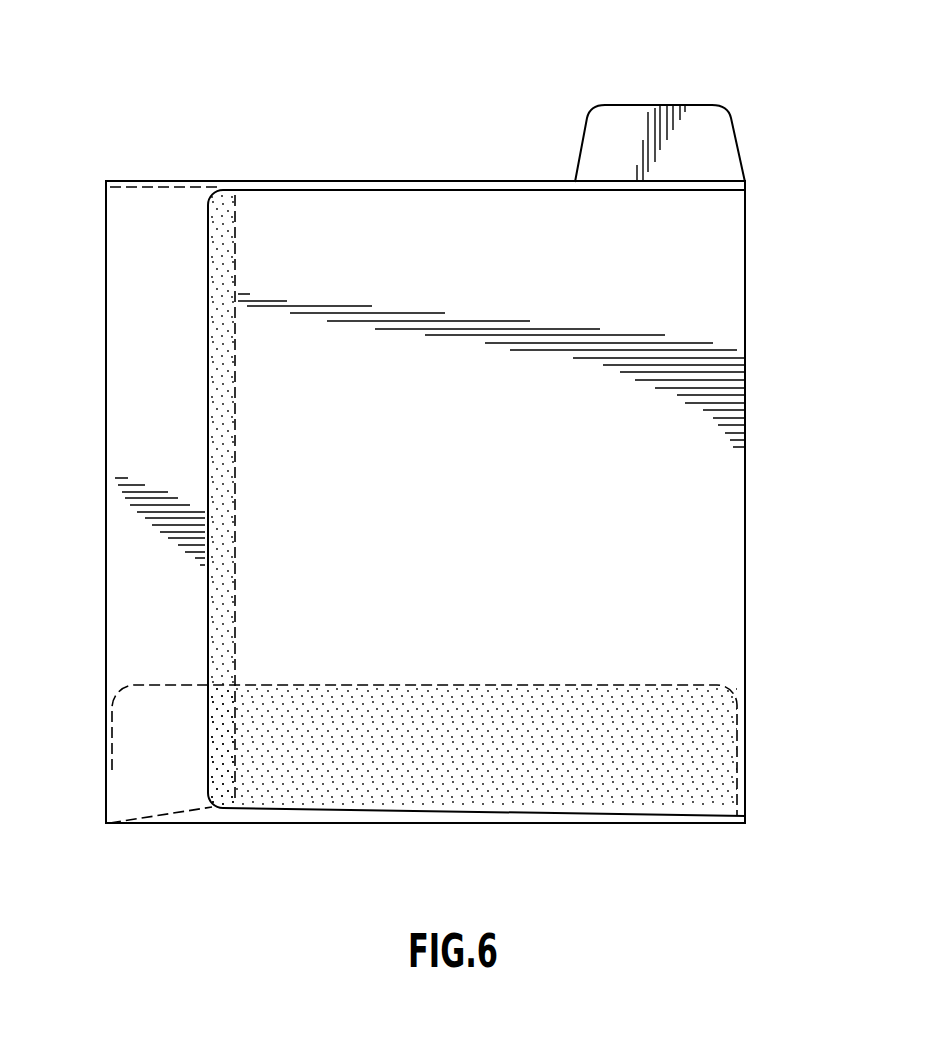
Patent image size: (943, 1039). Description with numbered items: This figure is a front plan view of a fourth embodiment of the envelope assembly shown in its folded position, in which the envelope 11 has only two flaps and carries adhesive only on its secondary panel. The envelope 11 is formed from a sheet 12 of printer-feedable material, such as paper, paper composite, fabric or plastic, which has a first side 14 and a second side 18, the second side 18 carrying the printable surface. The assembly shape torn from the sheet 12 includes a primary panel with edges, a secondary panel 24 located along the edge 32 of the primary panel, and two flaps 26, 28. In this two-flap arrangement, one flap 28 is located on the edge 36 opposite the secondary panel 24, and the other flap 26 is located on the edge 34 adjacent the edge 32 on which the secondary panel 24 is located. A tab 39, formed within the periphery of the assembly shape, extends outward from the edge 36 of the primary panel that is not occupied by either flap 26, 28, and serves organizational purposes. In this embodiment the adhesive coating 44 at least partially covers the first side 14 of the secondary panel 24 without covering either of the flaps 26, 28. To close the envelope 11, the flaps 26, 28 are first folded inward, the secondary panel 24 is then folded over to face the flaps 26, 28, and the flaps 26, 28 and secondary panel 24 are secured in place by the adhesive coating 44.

The envelope 11 is at (453, 100).
The sheet 12 is at (318, 188).
The first side 14 is at (243, 186).
The second side 18 is at (462, 448).
The secondary panel 24 is at (740, 458).
The flap 26 is at (732, 758).
The flap 28 is at (125, 441).
The edge 32 is at (745, 592).
The edge 34 is at (245, 823).
The edge 36 is at (105, 601).
The tab 39 is at (622, 118).
The adhesive coating 44 is at (216, 356).